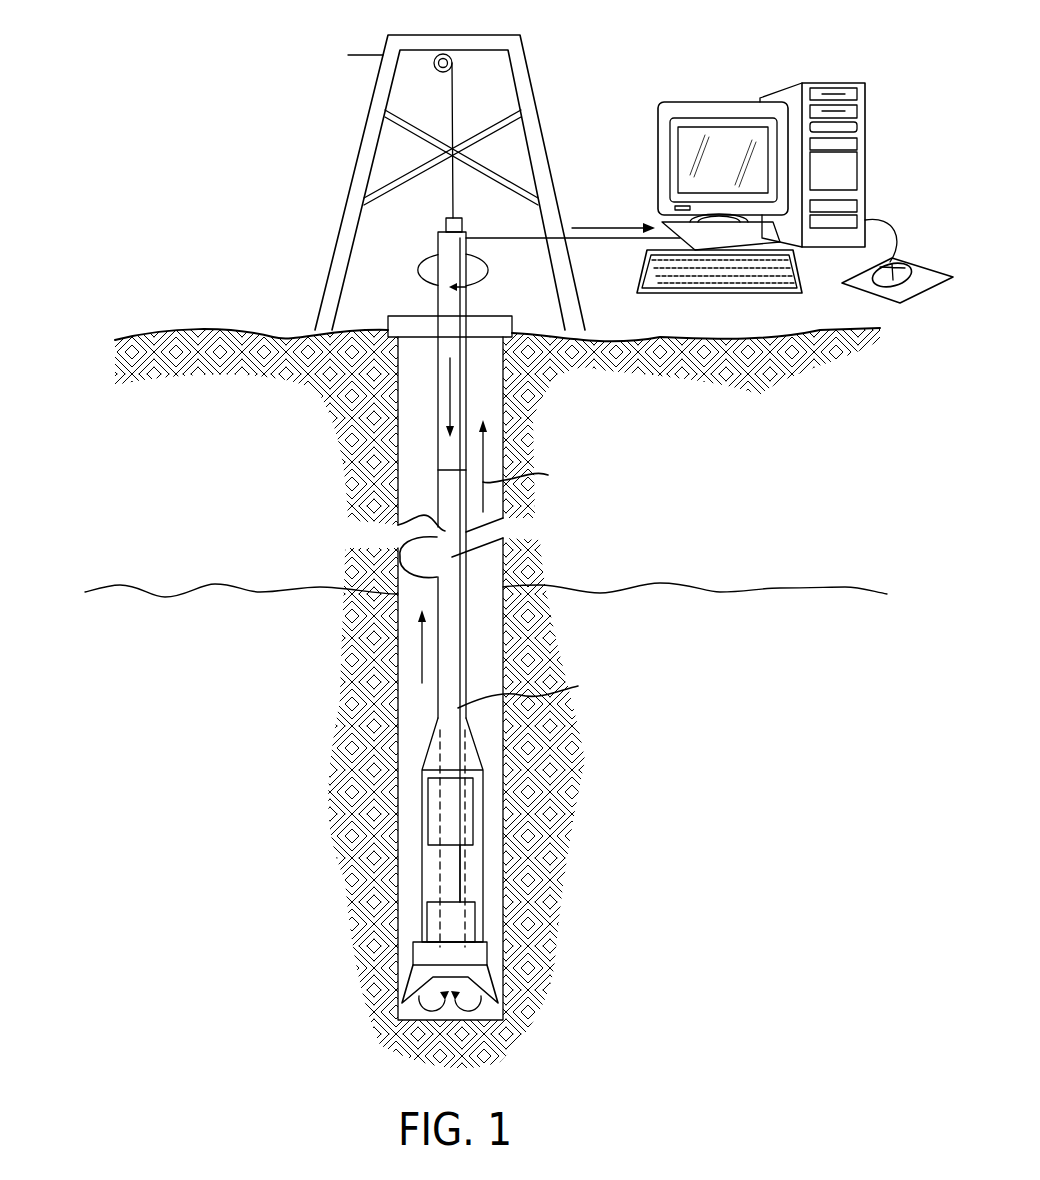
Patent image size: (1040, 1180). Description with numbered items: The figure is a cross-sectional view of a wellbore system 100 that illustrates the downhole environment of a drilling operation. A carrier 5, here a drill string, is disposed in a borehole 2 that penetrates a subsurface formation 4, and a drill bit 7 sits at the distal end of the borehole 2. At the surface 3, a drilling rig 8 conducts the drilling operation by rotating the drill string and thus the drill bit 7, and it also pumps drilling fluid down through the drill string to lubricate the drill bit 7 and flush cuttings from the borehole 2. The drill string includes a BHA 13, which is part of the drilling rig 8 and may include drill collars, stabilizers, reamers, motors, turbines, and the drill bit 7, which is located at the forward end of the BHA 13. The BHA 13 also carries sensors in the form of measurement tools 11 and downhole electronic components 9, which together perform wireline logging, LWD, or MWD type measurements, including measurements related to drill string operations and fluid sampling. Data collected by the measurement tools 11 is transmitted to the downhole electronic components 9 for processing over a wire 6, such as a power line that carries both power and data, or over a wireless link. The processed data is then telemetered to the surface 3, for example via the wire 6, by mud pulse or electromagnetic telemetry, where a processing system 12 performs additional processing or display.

The wellbore system 100 is at (153, 125).
The processing system 12 is at (815, 87).
The drilling rig 8 is at (313, 272).
The surface 3 is at (156, 320).
The borehole 2 is at (408, 475).
The carrier 5 is at (398, 560).
The formation 4 is at (224, 653).
The downhole electronic components 9 is at (473, 828).
The wire 6 is at (462, 858).
The measurement tools 11 is at (475, 910).
The BHA 13 is at (487, 955).
The drill bit 7 is at (418, 973).